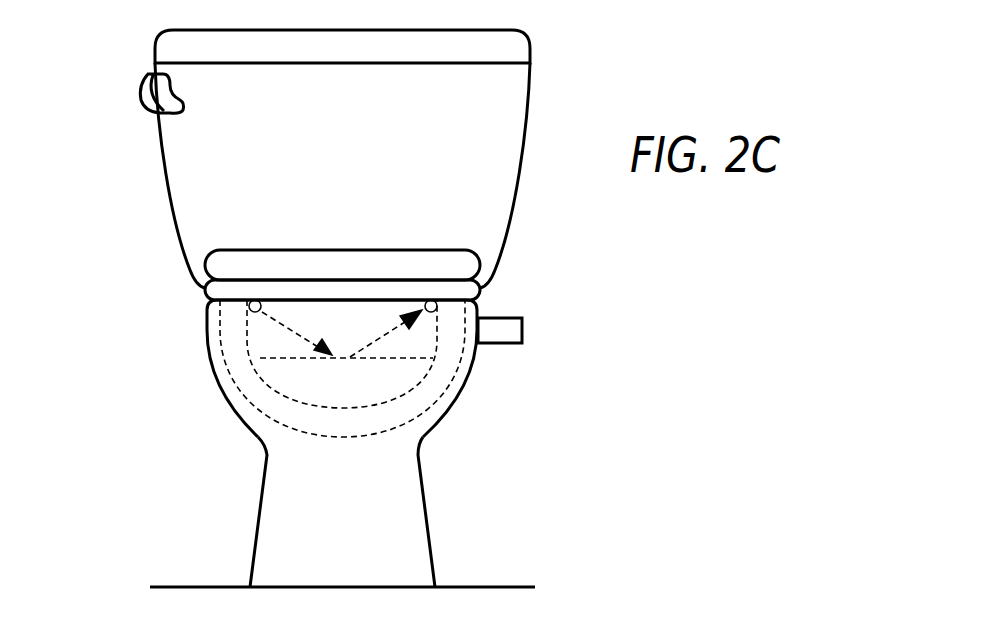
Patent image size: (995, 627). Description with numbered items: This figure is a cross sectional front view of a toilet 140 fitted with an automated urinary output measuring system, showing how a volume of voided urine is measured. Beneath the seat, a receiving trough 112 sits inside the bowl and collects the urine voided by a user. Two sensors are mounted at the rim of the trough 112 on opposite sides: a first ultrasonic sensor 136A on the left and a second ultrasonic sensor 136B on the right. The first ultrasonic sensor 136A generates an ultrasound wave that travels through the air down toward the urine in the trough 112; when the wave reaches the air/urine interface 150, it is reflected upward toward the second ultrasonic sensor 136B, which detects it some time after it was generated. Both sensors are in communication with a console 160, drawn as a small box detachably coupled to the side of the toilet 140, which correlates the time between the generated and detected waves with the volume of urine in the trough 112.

The receiving trough 112 is at (247, 340).
The first ultrasonic sensor 136A is at (252, 309).
The second ultrasonic sensor 136B is at (452, 313).
The toilet 140 is at (393, 498).
The air/urine interface 150 is at (297, 358).
The console 160 is at (522, 332).